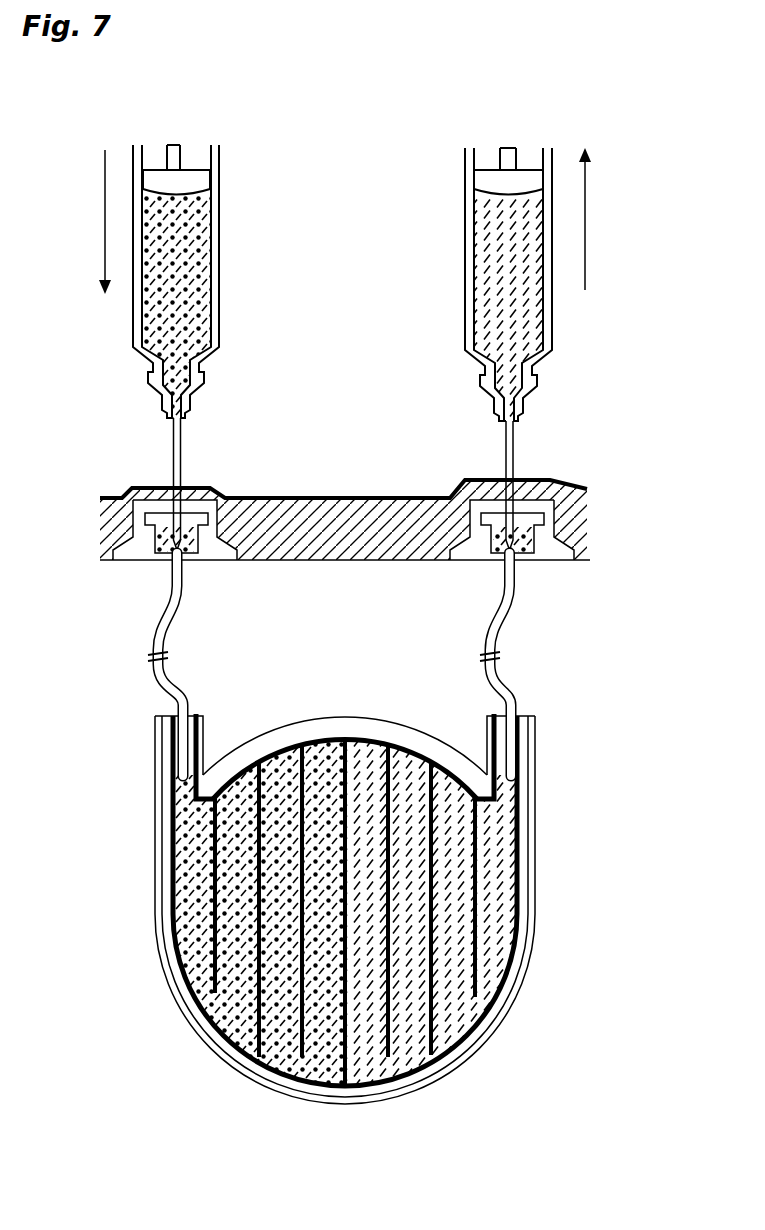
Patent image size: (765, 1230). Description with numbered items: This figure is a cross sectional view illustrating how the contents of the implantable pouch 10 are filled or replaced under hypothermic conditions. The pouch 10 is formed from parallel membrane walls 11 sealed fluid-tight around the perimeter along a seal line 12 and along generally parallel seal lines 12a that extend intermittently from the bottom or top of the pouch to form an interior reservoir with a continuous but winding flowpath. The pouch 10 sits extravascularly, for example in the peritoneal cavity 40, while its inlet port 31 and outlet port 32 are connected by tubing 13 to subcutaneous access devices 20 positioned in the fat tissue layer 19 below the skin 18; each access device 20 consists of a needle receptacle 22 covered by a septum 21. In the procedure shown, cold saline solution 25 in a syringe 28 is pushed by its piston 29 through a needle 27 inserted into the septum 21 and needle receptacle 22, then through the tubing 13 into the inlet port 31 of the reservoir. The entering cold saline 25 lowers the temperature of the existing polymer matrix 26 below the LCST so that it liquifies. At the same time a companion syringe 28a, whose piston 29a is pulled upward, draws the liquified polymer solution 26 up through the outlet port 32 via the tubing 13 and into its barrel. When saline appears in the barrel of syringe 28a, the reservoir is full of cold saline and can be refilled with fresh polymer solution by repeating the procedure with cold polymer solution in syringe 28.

The implantable pouch 10 is at (512, 1013).
The membrane walls 11 is at (532, 827).
The seal line 12 is at (527, 752).
The parallel seal lines 12a is at (350, 1052).
The tubing 13 is at (168, 622).
The skin 18 is at (378, 497).
The fat tissue layer 19 is at (368, 540).
The subcutaneous access device 20 is at (122, 551).
The septum 21 is at (130, 487).
The needle receptacle 22 is at (204, 560).
The cold saline solution 25 is at (200, 237).
The polymer matrix 26 is at (525, 328).
The needle 27 is at (183, 462).
The syringe 28 is at (221, 302).
The companion syringe 28a is at (466, 273).
The piston 29 is at (185, 150).
The piston 29a is at (492, 150).
The inlet port 31 is at (166, 716).
The outlet port 32 is at (518, 703).
The peritoneal cavity 40 is at (82, 633).